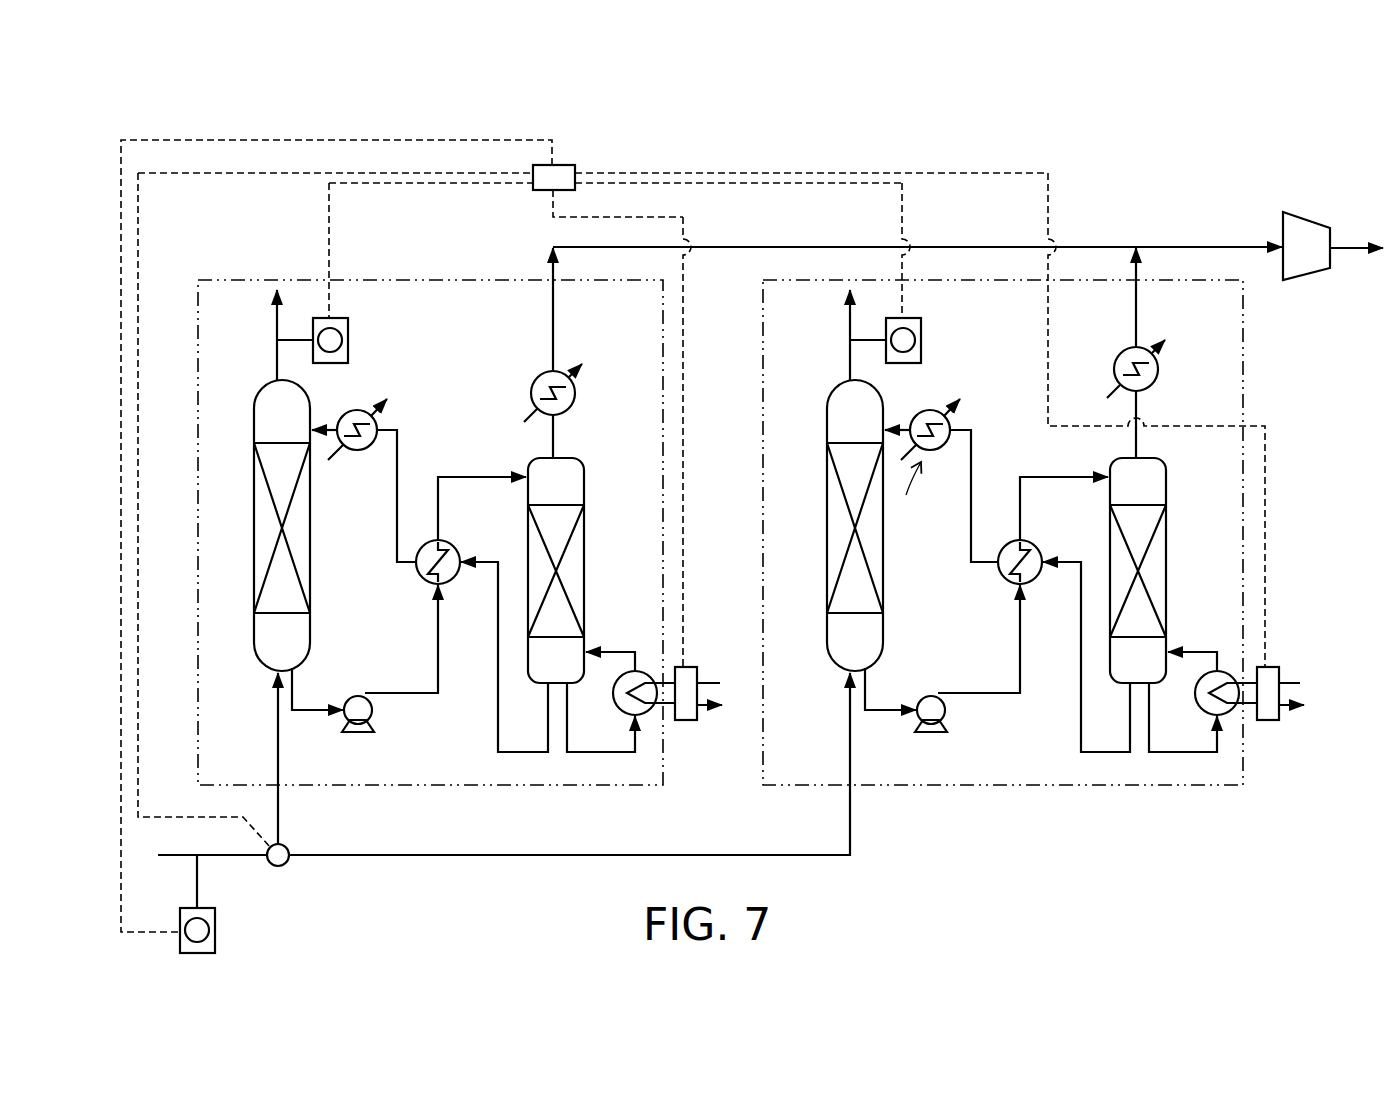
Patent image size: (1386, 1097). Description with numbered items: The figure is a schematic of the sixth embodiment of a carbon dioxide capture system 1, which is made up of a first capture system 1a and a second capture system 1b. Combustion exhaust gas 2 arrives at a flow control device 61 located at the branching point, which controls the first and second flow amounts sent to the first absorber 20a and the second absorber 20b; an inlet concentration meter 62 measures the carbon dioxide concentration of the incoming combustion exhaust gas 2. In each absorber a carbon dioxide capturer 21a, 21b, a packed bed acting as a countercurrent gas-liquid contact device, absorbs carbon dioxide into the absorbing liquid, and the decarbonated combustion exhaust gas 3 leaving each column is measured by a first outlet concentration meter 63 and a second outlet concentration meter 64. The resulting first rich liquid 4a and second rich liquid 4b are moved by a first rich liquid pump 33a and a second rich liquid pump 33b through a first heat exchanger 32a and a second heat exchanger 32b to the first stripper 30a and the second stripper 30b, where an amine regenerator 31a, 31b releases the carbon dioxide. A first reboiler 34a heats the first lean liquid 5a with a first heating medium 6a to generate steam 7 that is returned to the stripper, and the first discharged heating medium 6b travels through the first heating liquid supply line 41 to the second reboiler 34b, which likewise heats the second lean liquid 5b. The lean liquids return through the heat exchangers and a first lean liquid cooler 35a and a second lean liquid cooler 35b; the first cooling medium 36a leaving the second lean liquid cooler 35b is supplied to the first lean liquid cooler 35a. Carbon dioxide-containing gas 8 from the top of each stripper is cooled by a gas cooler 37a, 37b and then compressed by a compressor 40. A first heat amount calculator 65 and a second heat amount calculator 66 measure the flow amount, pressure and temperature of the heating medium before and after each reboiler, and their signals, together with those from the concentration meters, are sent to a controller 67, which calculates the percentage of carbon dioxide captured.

The carbon dioxide capture system 1 is at (211, 125).
The first capture system 1a is at (196, 596).
The second capture system 1b is at (1246, 370).
The combustion exhaust gas 2 is at (255, 870).
The decarbonated combustion exhaust gas 3 is at (263, 333).
The first rich liquid 4a is at (435, 707).
The second rich liquid 4b is at (1008, 707).
The first lean liquid 5a is at (600, 765).
The second lean liquid 5b is at (1190, 765).
The first heating medium 6a is at (743, 670).
The first discharged heating medium 6b is at (705, 727).
The steam 7 is at (602, 635).
The carbon dioxide-containing gas 8 is at (565, 315).
The first absorber 20a is at (250, 436).
The second absorber 20b is at (823, 436).
The carbon dioxide capturer 21a is at (262, 515).
The carbon dioxide capturer 21b is at (835, 515).
The first stripper 30a is at (525, 456).
The second stripper 30b is at (1168, 483).
The amine regenerator 31a is at (575, 556).
The amine regenerator 31b is at (1157, 556).
The first heat exchanger 32a is at (428, 584).
The second heat exchanger 32b is at (1008, 584).
The first rich liquid pump 33a is at (352, 735).
The second rich liquid pump 33b is at (928, 735).
The first reboiler 34a is at (614, 700).
The second reboiler 34b is at (1196, 700).
The first lean liquid cooler 35a is at (360, 408).
The second lean liquid cooler 35b is at (933, 408).
The first cooling medium 36a is at (348, 462).
The gas cooler 37a is at (533, 378).
The gas cooler 37b is at (1118, 350).
The compressor 40 is at (1312, 218).
The first heating liquid supply line 41 is at (664, 722).
The flow control device 61 is at (278, 866).
The inlet concentration meter 62 is at (216, 935).
The first outlet concentration meter 63 is at (348, 340).
The second outlet concentration meter 64 is at (921, 340).
The first heat amount calculator 65 is at (688, 722).
The second heat amount calculator 66 is at (1268, 722).
The controller 67 is at (565, 165).